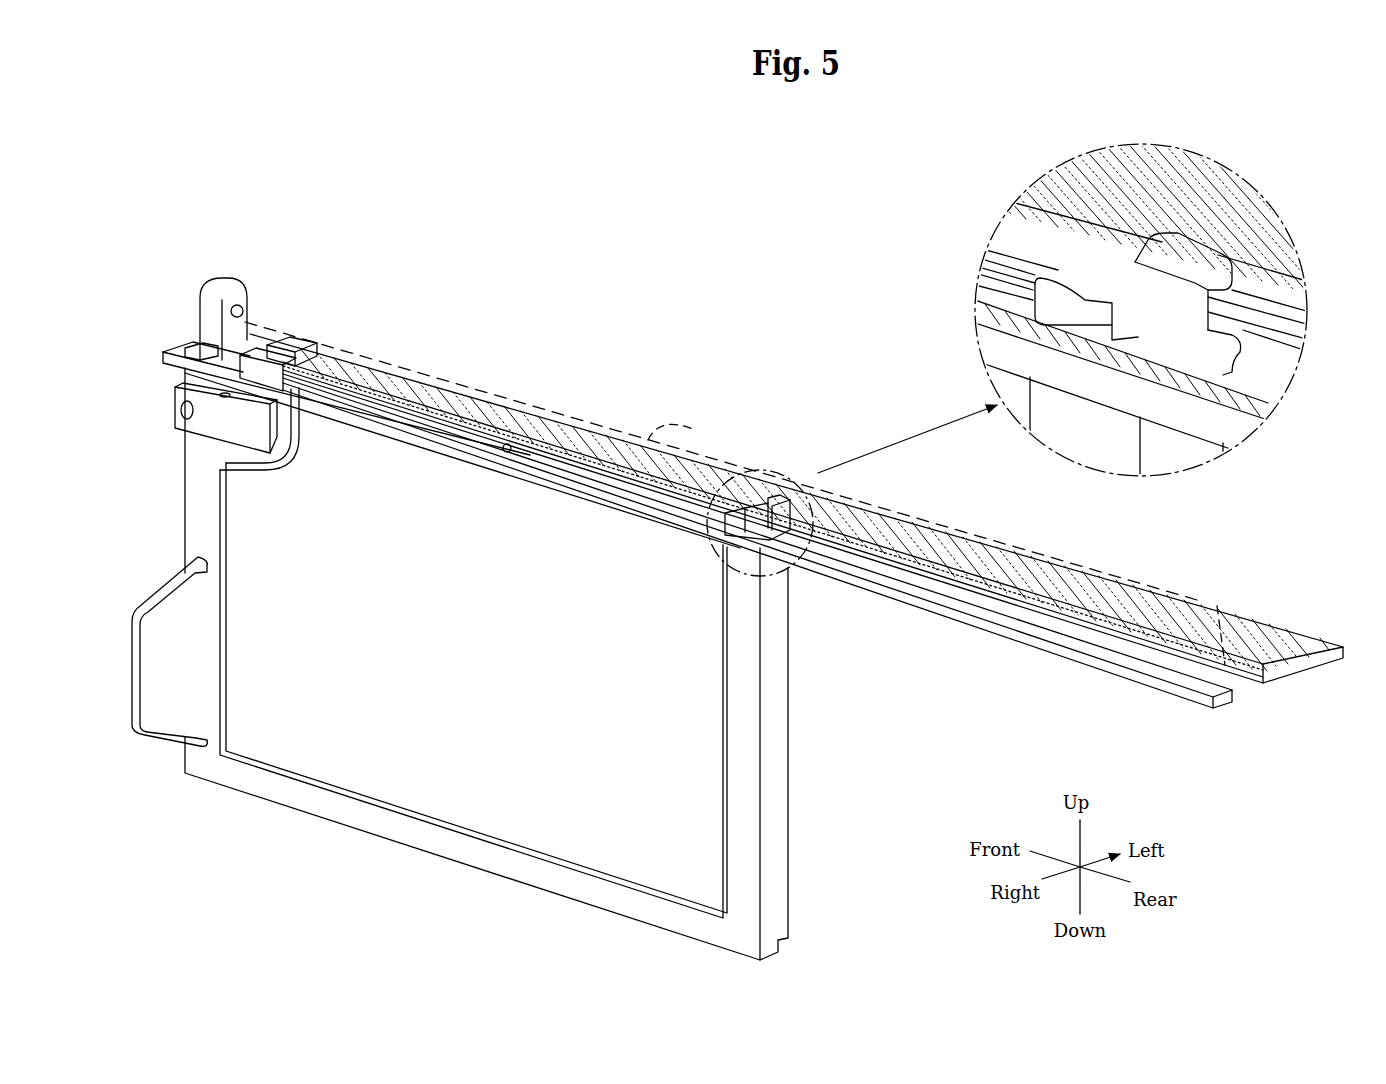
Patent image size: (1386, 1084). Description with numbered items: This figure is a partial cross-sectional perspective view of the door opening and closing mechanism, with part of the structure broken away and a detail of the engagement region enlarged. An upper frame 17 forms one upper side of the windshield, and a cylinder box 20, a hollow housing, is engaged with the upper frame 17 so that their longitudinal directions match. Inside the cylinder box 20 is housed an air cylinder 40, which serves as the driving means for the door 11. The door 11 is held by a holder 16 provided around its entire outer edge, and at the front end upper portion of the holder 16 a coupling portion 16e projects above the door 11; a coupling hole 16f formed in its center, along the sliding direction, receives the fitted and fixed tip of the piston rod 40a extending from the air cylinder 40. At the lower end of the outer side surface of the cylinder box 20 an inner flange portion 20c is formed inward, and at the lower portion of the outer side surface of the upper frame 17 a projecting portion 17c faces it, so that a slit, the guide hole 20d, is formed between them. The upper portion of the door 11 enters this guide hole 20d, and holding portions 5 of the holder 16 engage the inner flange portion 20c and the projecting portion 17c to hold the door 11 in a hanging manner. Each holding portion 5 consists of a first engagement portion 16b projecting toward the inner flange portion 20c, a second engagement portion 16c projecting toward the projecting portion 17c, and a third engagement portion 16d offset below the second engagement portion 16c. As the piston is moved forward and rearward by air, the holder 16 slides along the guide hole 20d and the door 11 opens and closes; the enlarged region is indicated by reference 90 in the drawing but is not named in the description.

The door 11 is at (306, 842).
The holder 16 is at (770, 746).
The coupling portion 16e is at (252, 290).
The coupling hole 16f is at (252, 312).
The holding portion 5 is at (318, 343).
The upper frame 17 is at (1302, 668).
The cylinder box 20 is at (1225, 702).
The air cylinder 40 is at (1172, 580).
The piston rod 40a is at (520, 392).
The tab 90 is at (1222, 240).
The second engagement portion 16c is at (1230, 273).
The projecting portion 17c is at (1285, 303).
The first engagement portion 16b is at (1048, 302).
The third engagement portion 16d is at (1237, 337).
The guide hole 20d is at (1250, 370).
The inner flange portion 20c is at (1275, 398).